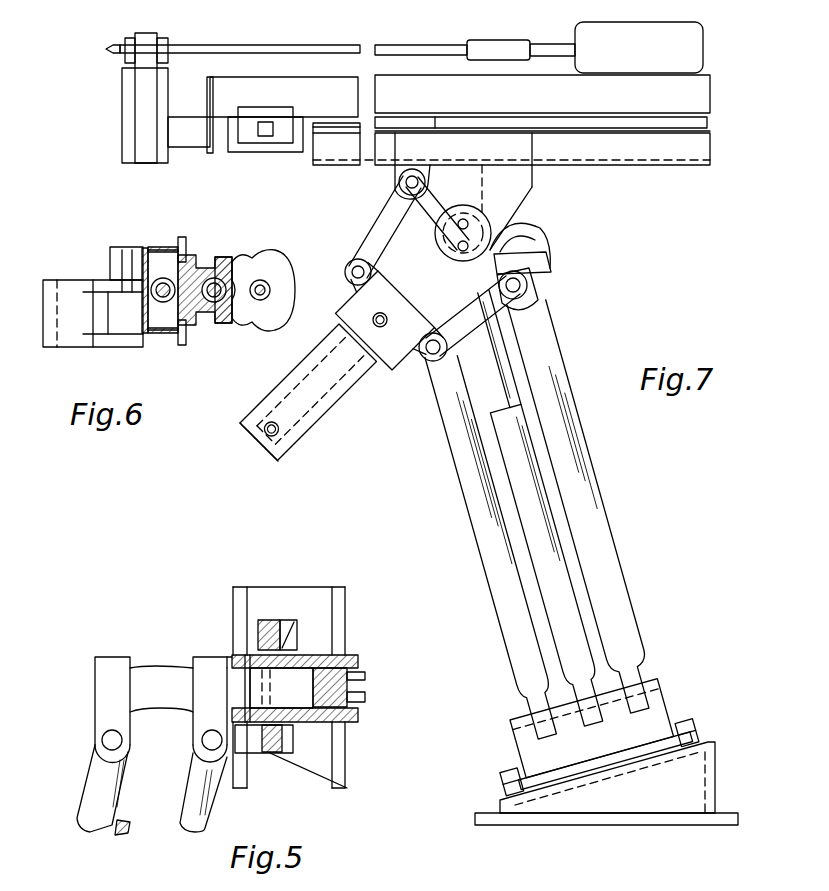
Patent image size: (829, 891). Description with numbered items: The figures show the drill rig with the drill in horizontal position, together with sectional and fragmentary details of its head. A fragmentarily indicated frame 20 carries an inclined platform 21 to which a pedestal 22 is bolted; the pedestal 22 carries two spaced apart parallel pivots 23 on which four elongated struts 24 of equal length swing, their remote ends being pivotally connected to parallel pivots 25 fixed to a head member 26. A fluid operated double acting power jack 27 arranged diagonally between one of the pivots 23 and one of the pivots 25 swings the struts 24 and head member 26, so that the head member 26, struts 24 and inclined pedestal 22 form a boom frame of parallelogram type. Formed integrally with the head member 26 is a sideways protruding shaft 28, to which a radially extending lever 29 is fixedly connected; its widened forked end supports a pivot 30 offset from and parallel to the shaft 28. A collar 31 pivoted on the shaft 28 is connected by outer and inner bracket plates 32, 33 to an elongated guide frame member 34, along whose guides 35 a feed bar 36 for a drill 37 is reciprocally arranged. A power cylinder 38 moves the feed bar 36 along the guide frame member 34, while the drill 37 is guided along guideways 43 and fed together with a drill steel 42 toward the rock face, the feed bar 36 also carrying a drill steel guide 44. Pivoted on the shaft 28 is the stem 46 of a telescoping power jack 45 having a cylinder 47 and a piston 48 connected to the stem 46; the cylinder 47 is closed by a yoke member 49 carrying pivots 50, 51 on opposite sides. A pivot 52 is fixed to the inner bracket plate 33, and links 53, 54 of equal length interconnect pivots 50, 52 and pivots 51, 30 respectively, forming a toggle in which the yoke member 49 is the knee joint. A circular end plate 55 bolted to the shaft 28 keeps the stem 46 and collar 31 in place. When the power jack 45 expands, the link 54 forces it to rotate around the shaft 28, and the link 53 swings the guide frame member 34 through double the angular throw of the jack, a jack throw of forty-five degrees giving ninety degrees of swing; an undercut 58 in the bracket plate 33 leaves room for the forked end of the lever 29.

In FIG. 7, the frame 20 is at (597, 818).
In FIG. 7, the inclined platform 21 is at (708, 760).
In FIG. 7, the pedestal 22 is at (660, 722).
In FIG. 7, the pivots 23 is at (657, 692).
In FIG. 7, the struts 24 is at (480, 503).
In FIG. 5, the struts 24 is at (190, 803).
In FIG. 5, the pivots 25 is at (205, 745).
In FIG. 7, the head member 26 is at (540, 258).
In FIG. 5, the head member 26 is at (165, 680).
In FIG. 7, the power jack 27 is at (545, 555).
In FIG. 5, the power jack 27 is at (117, 828).
In FIG. 7, the shaft 28 is at (440, 228).
In FIG. 5, the shaft 28 is at (360, 680).
In FIG. 7, the lever 29 is at (510, 238).
In FIG. 5, the lever 29 is at (240, 668).
In FIG. 7, the pivot 30 is at (522, 292).
In FIG. 5, the pivot 30 is at (290, 737).
In FIG. 6, the collar 31 is at (73, 335).
In FIG. 7, the bracket plate 32 is at (532, 178).
In FIG. 6, the bracket plate 32 is at (120, 340).
In FIG. 5, the bracket plate 32 is at (340, 633).
In FIG. 7, the bracket plate 33 is at (470, 173).
In FIG. 6, the bracket plate 33 is at (122, 287).
In FIG. 5, the bracket plate 33 is at (290, 645).
In FIG. 7, the guide frame member 34 is at (688, 148).
In FIG. 6, the guide frame member 34 is at (122, 258).
In FIG. 5, the guide frame member 34 is at (317, 770).
In FIG. 7, the guides 35 is at (705, 125).
In FIG. 6, the guides 35 is at (186, 255).
In FIG. 7, the feed bar 36 is at (690, 90).
In FIG. 6, the feed bar 36 is at (215, 262).
In FIG. 7, the drill 37 is at (580, 30).
In FIG. 6, the drill 37 is at (280, 277).
In FIG. 6, the power cylinder 38 is at (163, 278).
In FIG. 7, the drill steel 42 is at (393, 50).
In FIG. 6, the guideways 43 is at (248, 262).
In FIG. 7, the drill steel guide 44 is at (147, 90).
In FIG. 7, the power jack 45 is at (305, 437).
In FIG. 7, the stem 46 is at (385, 262).
In FIG. 5, the stem 46 is at (262, 655).
In FIG. 7, the cylinder 47 is at (352, 385).
In FIG. 7, the piston 48 is at (322, 382).
In FIG. 7, the yoke member 49 is at (403, 340).
In FIG. 7, the pivot 50 is at (348, 282).
In FIG. 7, the pivot 51 is at (430, 362).
In FIG. 7, the pivot 52 is at (398, 180).
In FIG. 6, the pivot 52 is at (127, 275).
In FIG. 5, the pivot 52 is at (296, 620).
In FIG. 7, the link 53 is at (410, 238).
In FIG. 5, the link 53 is at (268, 620).
In FIG. 7, the link 54 is at (470, 328).
In FIG. 5, the link 54 is at (347, 788).
In FIG. 5, the end plate 55 is at (358, 716).
In FIG. 7, the undercut 58 is at (483, 198).